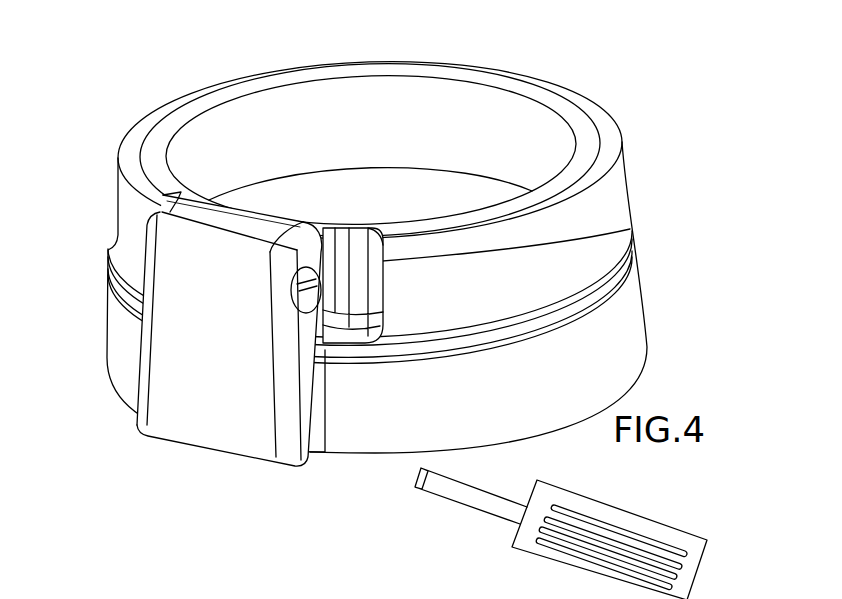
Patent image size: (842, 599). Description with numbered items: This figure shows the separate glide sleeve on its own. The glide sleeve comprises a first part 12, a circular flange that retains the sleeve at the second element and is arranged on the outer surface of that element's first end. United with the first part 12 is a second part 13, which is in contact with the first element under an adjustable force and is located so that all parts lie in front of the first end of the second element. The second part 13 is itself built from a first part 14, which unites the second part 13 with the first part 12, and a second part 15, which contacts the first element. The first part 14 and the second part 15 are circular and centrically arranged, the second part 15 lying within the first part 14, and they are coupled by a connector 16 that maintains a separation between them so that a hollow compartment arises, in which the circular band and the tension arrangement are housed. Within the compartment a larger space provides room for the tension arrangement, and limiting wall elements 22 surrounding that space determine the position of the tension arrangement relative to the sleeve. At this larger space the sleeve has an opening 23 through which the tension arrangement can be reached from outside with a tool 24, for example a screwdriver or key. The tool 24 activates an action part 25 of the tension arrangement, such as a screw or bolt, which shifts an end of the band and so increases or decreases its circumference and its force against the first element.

The first part 12 is at (86, 336).
The second part 13 is at (85, 229).
The first part of the second part 14 is at (603, 245).
The second part of the second part 15 is at (462, 95).
The connector 16 is at (582, 152).
The limiting wall elements 22 is at (307, 343).
The opening 23 is at (290, 302).
The tool 24 is at (492, 528).
The action part 25 is at (323, 227).